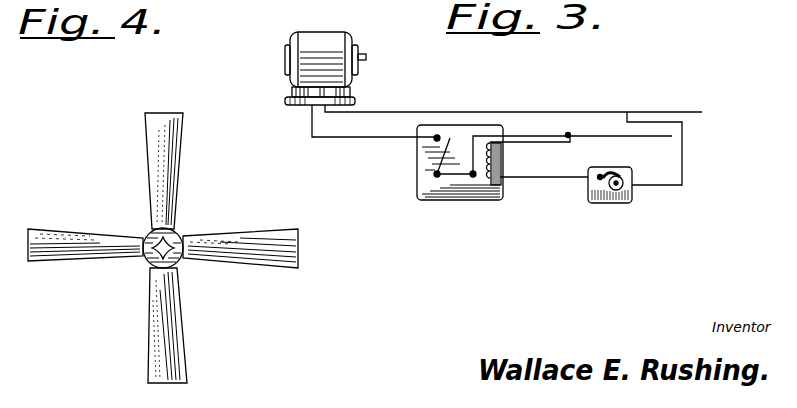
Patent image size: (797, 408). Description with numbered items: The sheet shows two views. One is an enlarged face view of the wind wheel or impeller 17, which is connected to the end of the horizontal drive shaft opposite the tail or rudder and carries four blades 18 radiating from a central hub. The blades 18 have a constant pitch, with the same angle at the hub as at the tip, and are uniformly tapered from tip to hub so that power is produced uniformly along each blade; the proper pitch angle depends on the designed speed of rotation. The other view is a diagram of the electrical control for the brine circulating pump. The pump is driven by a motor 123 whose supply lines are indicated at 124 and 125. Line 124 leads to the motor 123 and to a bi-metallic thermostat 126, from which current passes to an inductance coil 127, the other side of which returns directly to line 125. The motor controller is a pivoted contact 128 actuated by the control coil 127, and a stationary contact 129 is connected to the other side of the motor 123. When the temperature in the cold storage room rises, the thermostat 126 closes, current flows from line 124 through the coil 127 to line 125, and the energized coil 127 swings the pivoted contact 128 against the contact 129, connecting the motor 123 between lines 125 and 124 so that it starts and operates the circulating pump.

In FIG. 4, the wind wheel or impeller 17 is at (145, 262).
In FIG. 4, the blades 18 is at (160, 190).
In FIG. 3, the motor 123 is at (290, 81).
In FIG. 3, the supply line 124 is at (615, 112).
In FIG. 3, the supply line 125 is at (335, 138).
In FIG. 3, the bi-metallic thermostat 126 is at (632, 197).
In FIG. 3, the inductance coil 127 is at (504, 183).
In FIG. 3, the pivoted contact 128 is at (437, 171).
In FIG. 3, the contact 129 is at (437, 138).